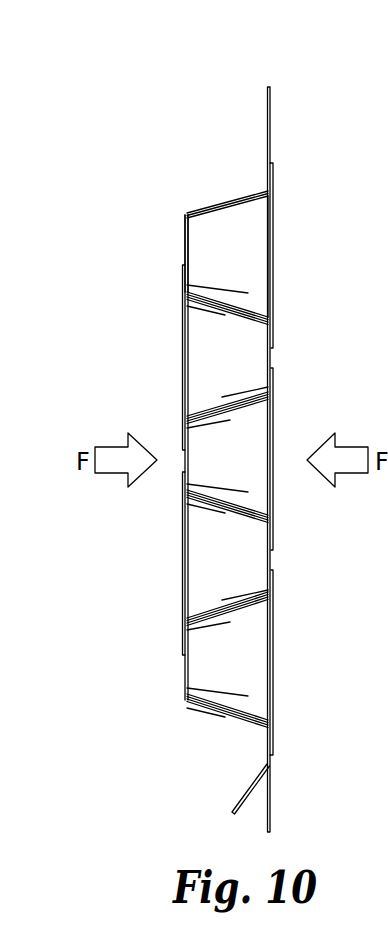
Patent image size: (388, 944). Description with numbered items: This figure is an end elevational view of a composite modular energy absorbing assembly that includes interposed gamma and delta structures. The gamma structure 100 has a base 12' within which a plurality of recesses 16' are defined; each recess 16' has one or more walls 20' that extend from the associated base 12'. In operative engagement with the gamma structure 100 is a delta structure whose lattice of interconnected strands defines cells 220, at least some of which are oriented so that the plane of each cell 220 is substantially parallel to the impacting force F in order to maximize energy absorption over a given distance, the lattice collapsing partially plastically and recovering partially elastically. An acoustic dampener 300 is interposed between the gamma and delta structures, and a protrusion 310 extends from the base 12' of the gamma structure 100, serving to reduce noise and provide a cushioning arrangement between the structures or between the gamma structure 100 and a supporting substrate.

The gamma structure 100 is at (271, 128).
The base 12' is at (306, 455).
The recess 16' is at (219, 224).
The wall 20' is at (227, 168).
The cell 220 is at (242, 409).
The acoustic dampener 300 is at (237, 610).
The protrusion 310 is at (249, 788).